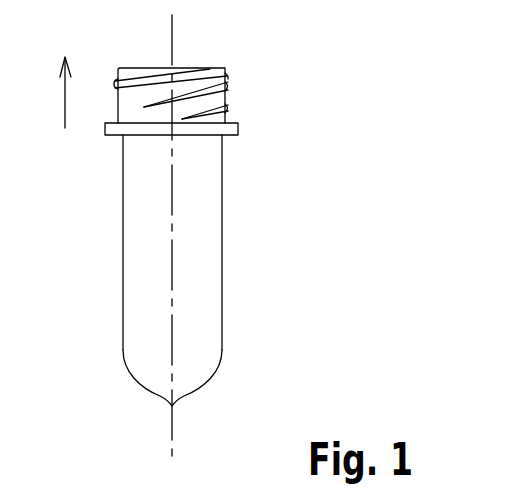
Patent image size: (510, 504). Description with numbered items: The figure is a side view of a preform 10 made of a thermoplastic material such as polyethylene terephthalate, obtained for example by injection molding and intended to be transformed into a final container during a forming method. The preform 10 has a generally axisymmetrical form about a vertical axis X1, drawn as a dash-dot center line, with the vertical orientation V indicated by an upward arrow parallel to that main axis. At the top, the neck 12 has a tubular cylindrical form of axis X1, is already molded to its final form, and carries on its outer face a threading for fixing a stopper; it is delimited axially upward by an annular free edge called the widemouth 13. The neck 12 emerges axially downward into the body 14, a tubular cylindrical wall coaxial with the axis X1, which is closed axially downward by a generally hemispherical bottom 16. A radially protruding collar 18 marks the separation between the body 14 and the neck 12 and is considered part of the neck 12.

The preform 10 is at (208, 204).
The neck 12 is at (226, 76).
The widemouth 13 is at (136, 68).
The body 14 is at (200, 259).
The bottom 16 is at (200, 383).
The collar 18 is at (127, 135).
The vertical orientation V is at (54, 92).
The vertical axis X1 is at (172, 438).